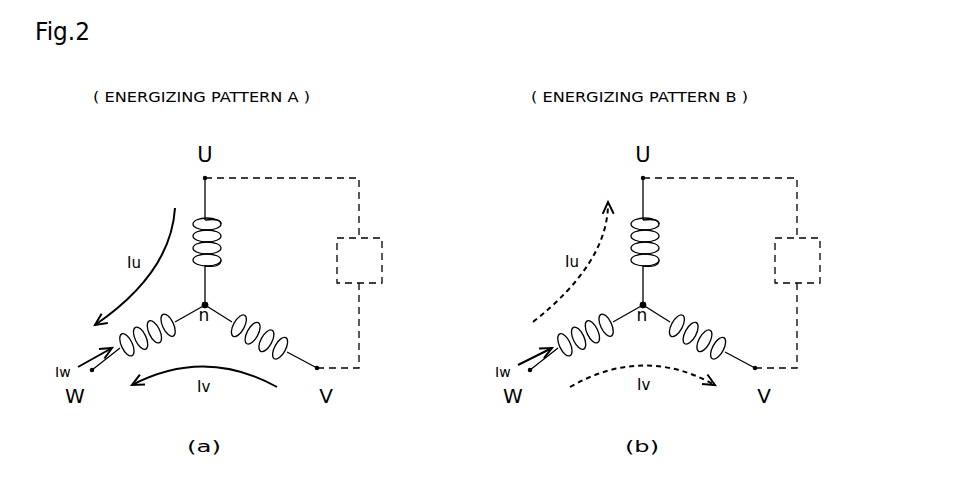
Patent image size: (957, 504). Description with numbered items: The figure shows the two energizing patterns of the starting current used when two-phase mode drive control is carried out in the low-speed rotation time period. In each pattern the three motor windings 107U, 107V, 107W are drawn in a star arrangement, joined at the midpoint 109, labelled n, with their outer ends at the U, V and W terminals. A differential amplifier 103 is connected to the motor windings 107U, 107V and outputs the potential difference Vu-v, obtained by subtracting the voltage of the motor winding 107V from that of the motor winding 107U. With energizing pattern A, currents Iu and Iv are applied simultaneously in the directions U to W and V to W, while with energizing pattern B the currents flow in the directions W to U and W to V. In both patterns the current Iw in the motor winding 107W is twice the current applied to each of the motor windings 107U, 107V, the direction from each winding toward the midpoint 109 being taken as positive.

The motor winding 107U is at (222, 220).
The motor winding 107V is at (275, 323).
The motor winding 107W is at (162, 316).
The midpoint 109 is at (208, 303).
The differential amplifier 103 is at (372, 271).